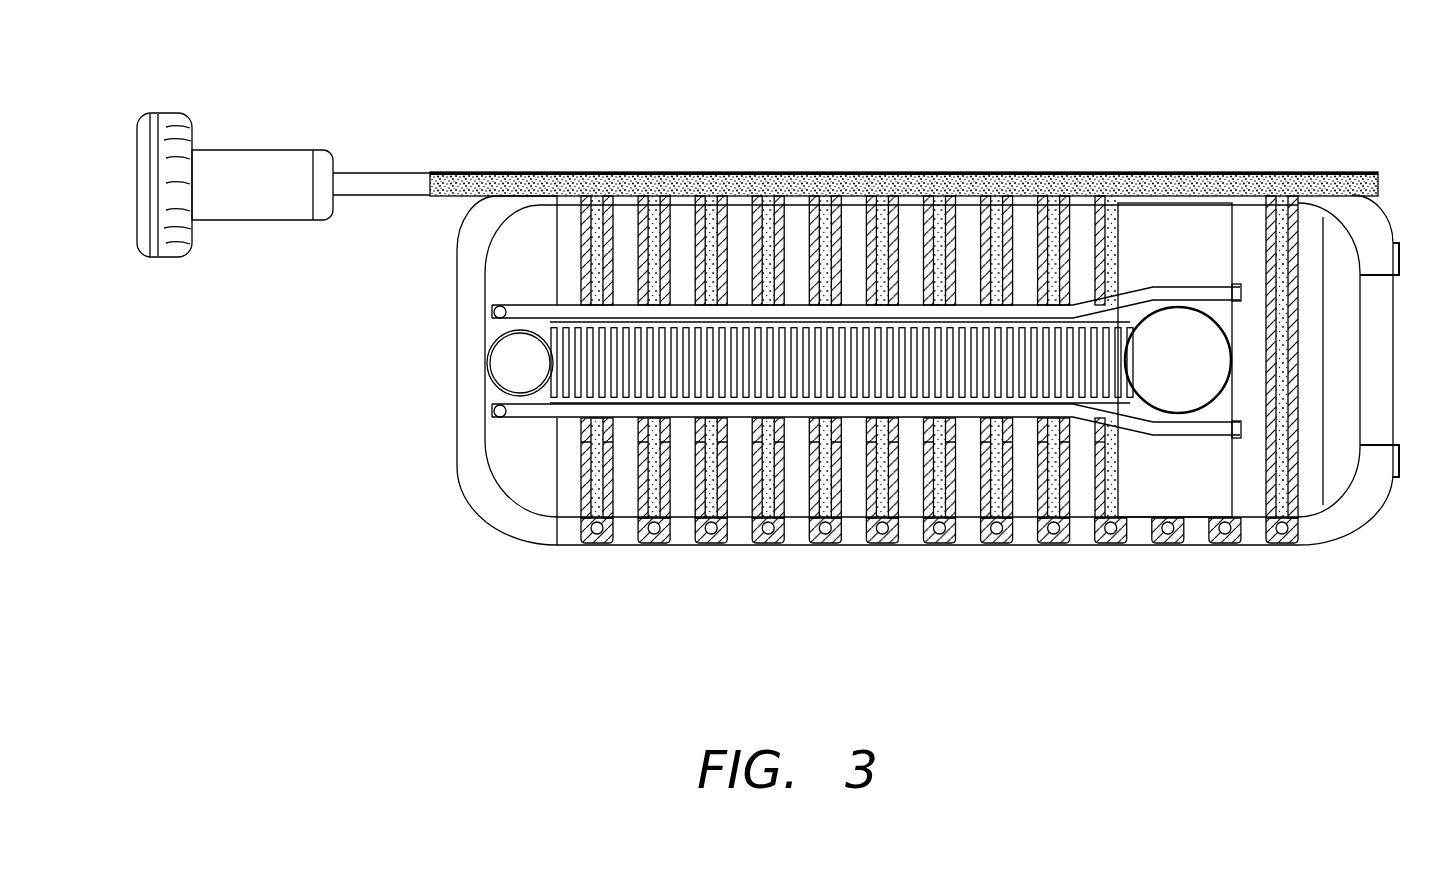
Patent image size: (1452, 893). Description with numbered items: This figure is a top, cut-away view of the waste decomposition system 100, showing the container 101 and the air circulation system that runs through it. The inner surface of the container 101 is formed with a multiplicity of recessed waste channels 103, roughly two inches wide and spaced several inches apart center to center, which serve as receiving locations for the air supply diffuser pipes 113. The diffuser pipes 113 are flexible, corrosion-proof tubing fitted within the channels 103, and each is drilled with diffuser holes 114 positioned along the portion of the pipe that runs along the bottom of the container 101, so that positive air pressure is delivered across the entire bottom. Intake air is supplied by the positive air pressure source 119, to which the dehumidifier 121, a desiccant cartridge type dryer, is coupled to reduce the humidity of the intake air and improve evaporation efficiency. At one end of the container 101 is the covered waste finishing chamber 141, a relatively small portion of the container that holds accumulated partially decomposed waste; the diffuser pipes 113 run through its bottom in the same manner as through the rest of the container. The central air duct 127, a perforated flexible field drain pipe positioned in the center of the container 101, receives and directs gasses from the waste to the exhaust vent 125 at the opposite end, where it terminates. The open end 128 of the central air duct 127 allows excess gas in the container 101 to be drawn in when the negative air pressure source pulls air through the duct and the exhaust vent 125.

The device assembly 100 is at (1310, 90).
The container 101 is at (456, 445).
The waste channels 103 is at (712, 545).
The air supply diffuser pipes 113 is at (890, 545).
The diffuser holes 114 is at (882, 200).
The positive air pressure source 119 is at (258, 152).
The dehumidifier 121 is at (333, 157).
The exhaust vent 125 is at (1178, 360).
The central air duct 127 is at (540, 337).
The open end of the central air duct 128 is at (515, 362).
The waste finishing chamber 141 is at (1175, 360).